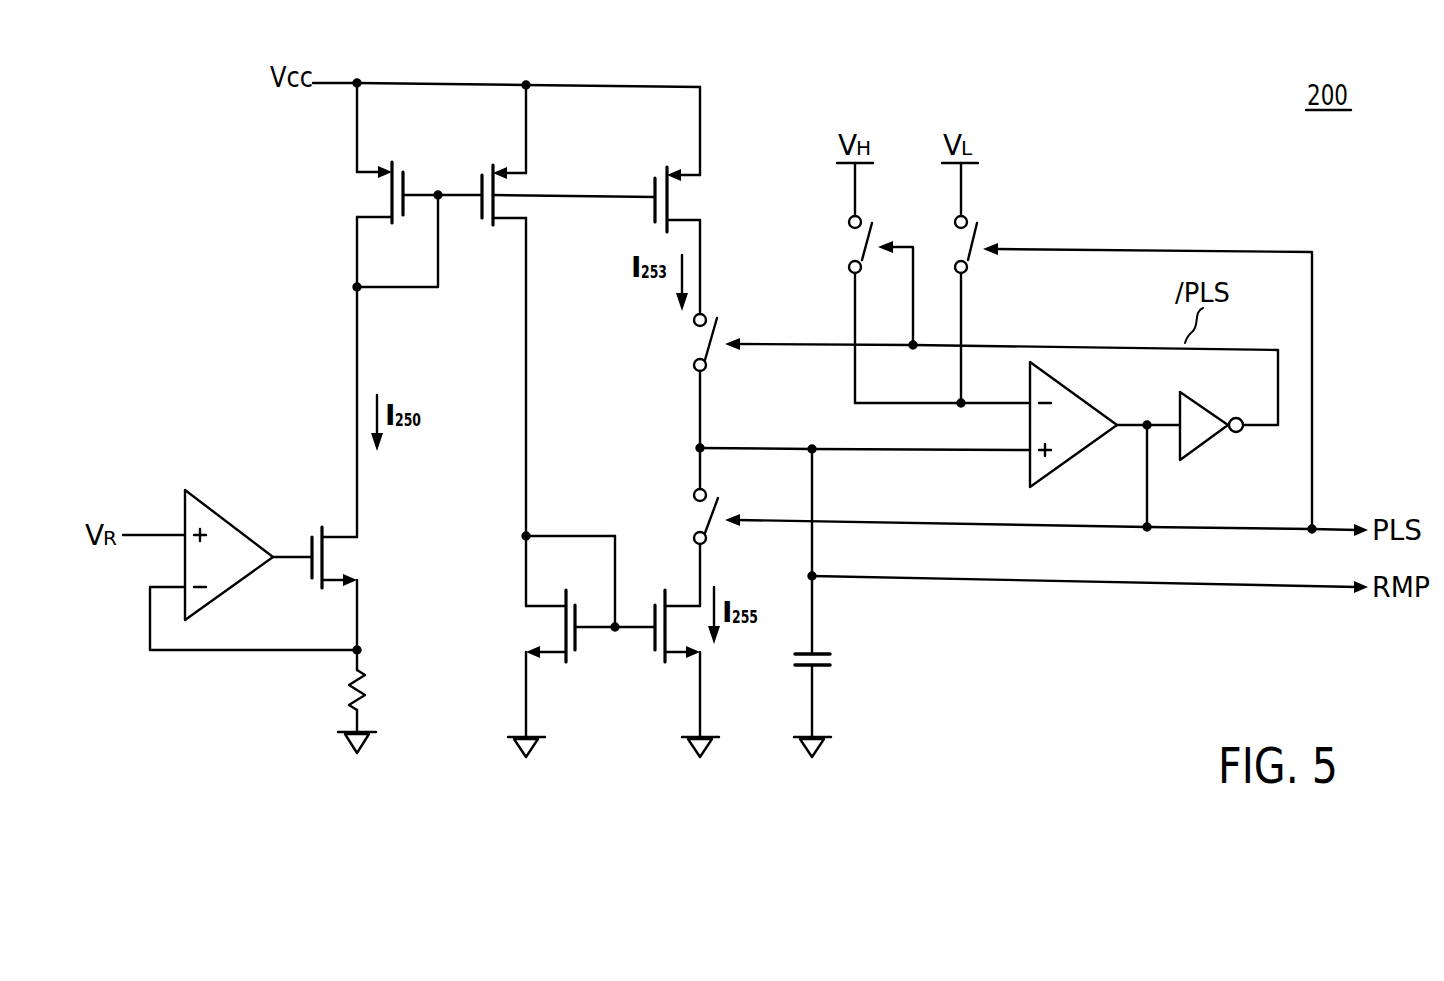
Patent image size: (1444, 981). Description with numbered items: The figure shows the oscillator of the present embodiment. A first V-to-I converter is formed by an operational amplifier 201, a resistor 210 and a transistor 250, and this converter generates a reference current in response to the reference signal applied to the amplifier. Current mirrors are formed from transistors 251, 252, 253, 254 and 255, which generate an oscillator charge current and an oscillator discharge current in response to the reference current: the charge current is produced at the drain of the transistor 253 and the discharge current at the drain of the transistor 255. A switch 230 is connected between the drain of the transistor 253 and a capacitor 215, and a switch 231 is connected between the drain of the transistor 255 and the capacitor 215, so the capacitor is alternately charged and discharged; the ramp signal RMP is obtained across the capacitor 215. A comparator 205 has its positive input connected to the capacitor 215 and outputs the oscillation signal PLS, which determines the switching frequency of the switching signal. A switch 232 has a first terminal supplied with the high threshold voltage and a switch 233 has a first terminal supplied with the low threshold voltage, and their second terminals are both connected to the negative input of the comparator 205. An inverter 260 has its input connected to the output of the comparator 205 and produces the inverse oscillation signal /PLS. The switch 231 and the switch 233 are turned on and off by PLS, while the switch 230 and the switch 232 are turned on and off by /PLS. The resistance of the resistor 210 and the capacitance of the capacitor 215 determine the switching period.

The operational amplifier 201 is at (230, 520).
The comparator 205 is at (1078, 463).
The resistor 210 is at (373, 695).
The capacitor 215 is at (835, 660).
The switch 230 is at (688, 345).
The switch 231 is at (688, 518).
The switch 232 is at (845, 243).
The switch 233 is at (977, 270).
The transistor 250 is at (360, 560).
The transistor 251 is at (352, 195).
The transistor 252 is at (532, 208).
The transistor 253 is at (698, 195).
The transistor 254 is at (528, 627).
The transistor 255 is at (667, 662).
The inverter 260 is at (1202, 453).